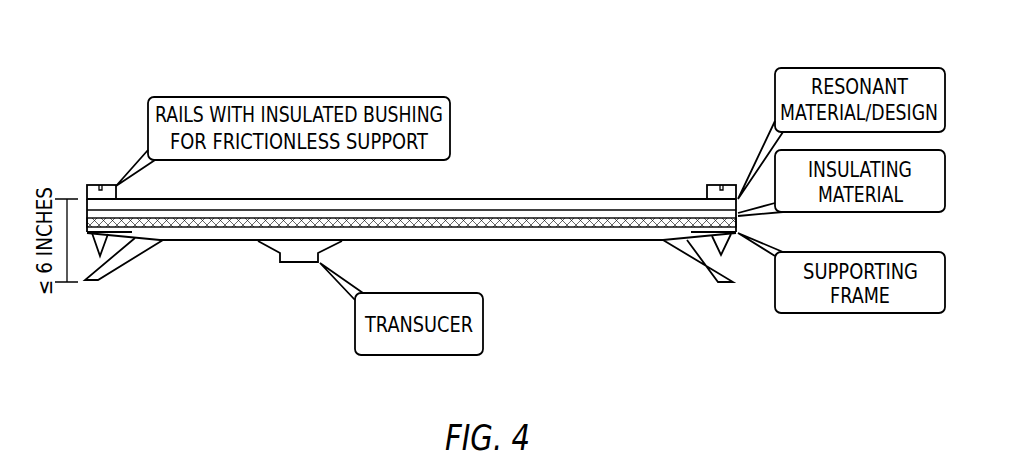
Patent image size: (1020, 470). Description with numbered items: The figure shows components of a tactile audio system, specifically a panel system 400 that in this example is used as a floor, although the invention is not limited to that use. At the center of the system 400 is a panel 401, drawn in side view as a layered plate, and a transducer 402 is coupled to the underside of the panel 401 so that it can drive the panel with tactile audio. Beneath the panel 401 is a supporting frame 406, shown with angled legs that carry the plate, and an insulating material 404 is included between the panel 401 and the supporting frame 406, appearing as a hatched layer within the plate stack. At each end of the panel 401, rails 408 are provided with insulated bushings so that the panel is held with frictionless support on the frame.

The panel system 400 is at (102, 58).
The panel 401 is at (412, 199).
The transducer 402 is at (300, 263).
The insulating material 404 is at (558, 221).
The supporting frame 406 is at (688, 265).
The rails 408 is at (100, 184).